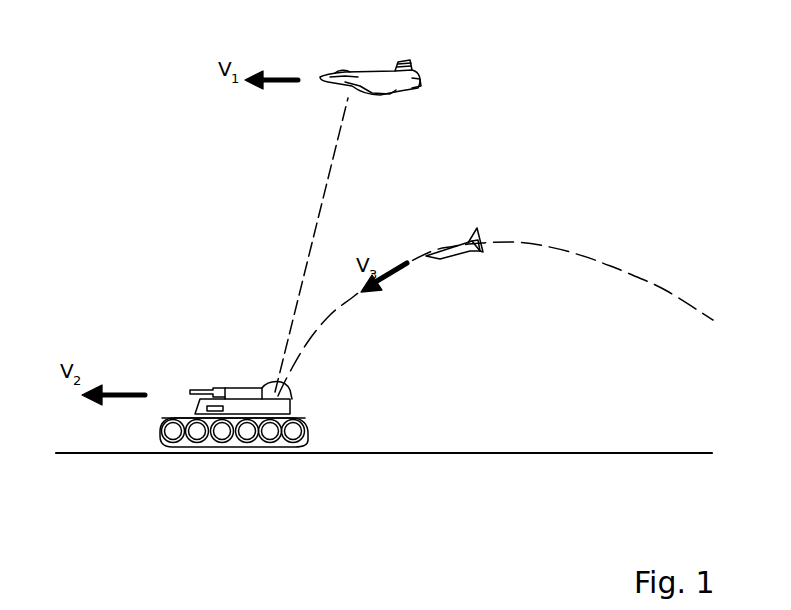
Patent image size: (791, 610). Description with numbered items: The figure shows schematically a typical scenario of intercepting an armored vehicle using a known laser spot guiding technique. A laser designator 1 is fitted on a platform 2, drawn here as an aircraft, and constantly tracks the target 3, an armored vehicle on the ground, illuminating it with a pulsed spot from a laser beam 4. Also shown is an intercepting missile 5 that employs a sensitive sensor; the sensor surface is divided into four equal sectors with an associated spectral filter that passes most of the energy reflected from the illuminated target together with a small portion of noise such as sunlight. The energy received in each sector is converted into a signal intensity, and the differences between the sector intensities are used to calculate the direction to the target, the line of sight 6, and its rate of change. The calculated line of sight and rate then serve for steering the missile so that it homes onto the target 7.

The laser designator 1 is at (338, 83).
The platform 2 is at (348, 78).
The target 3 is at (223, 437).
The laser beam 4 is at (310, 245).
The intercepting missile 5 is at (452, 255).
The line of sight (LOS) 6 is at (323, 330).
The target 7 is at (283, 439).